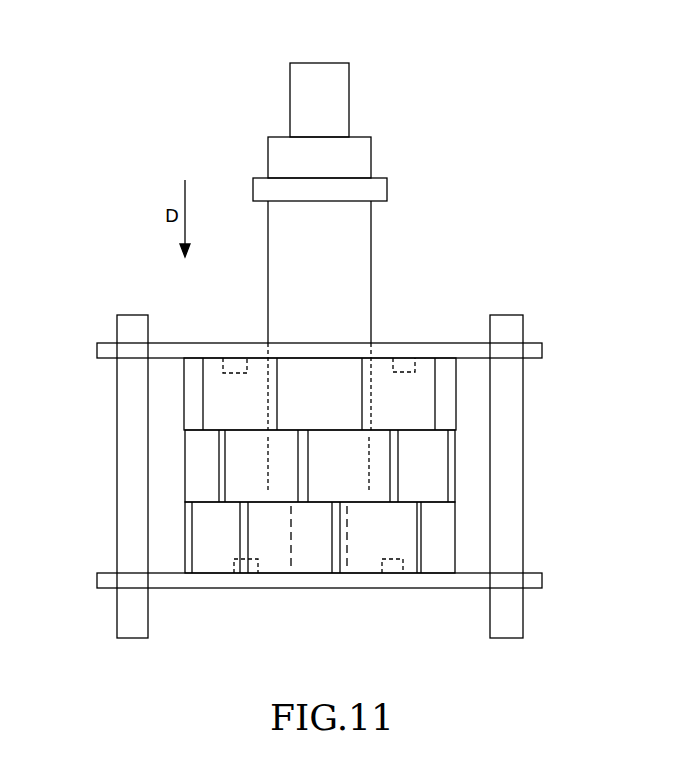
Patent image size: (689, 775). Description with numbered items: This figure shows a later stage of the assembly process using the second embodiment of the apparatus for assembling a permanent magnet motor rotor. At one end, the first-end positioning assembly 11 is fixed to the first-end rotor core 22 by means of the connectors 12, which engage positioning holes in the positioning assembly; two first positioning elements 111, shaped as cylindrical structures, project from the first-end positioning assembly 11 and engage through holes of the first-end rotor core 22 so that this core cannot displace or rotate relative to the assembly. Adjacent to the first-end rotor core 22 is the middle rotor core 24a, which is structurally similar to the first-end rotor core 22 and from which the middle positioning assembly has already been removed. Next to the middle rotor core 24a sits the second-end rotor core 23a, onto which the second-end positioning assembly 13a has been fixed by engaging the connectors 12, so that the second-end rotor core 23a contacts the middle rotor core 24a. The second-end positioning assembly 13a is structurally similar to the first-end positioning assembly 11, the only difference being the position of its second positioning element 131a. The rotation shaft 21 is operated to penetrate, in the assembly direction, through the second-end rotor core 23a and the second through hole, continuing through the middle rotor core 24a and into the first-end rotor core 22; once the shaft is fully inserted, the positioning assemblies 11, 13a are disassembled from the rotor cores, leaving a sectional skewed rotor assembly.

The rotation shaft 21 is at (362, 246).
The first-end positioning assembly 11 is at (456, 354).
The first positioning element 111 is at (401, 366).
The connector 12 is at (515, 400).
The first-end rotor core 22 is at (196, 398).
The middle rotor core 24a is at (196, 471).
The second-end rotor core 23a is at (207, 534).
The second-end positioning assembly 13a is at (455, 583).
The second positioning element 131a is at (396, 575).